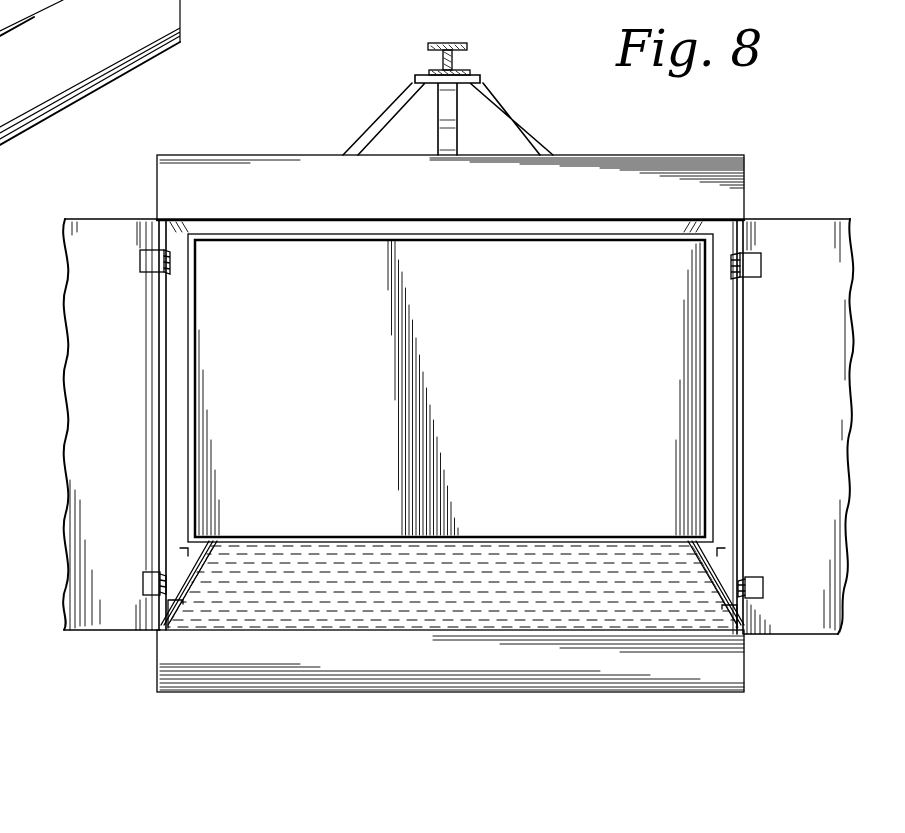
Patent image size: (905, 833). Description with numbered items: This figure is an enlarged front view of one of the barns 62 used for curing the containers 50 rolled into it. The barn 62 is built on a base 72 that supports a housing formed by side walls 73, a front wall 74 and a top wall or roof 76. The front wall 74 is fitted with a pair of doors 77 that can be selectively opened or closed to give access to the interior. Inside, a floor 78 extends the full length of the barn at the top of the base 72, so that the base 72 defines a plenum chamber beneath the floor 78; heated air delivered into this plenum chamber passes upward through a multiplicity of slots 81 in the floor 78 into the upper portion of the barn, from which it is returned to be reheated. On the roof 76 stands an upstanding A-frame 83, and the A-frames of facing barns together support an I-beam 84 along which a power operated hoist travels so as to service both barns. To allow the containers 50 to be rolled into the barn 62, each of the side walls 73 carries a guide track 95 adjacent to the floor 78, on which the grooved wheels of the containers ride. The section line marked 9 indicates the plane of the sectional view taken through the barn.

The section line 9- 9 is at (447, 3).
The glass panel 50 is at (672, 413).
The barn 62 is at (453, 426).
The base 72 is at (600, 690).
The side walls 73 is at (170, 232).
The front wall 74 is at (285, 158).
The top wall or roof 76 is at (628, 157).
The doors 77 is at (82, 250).
The floor 78 is at (280, 622).
The slots 81 is at (388, 548).
The A-frame 83 is at (385, 118).
The I-beam 84 is at (462, 43).
The guide track 95 is at (178, 562).